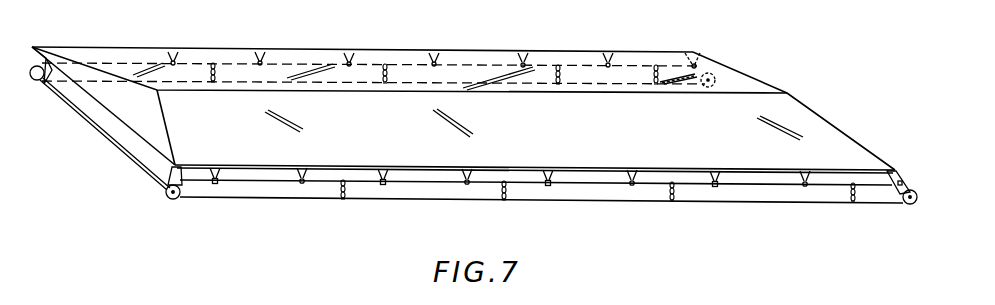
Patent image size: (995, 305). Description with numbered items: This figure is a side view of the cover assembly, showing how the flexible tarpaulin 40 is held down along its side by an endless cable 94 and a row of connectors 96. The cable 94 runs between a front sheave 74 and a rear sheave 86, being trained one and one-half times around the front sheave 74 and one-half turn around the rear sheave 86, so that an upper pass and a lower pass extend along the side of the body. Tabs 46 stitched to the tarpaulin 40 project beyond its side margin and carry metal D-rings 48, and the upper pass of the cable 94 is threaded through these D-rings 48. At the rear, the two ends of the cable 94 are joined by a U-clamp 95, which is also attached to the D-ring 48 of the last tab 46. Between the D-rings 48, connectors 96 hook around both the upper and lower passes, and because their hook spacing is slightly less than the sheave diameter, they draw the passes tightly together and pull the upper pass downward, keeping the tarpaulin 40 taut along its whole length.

The tarpaulin 40 is at (793, 108).
The tabs 46 is at (383, 170).
The D-rings 48 is at (217, 184).
The front sheave 74 is at (176, 200).
The rear sheave 86 is at (911, 205).
The cable 94 is at (718, 203).
The U-clamp 95 is at (905, 180).
The connectors 96 is at (338, 192).